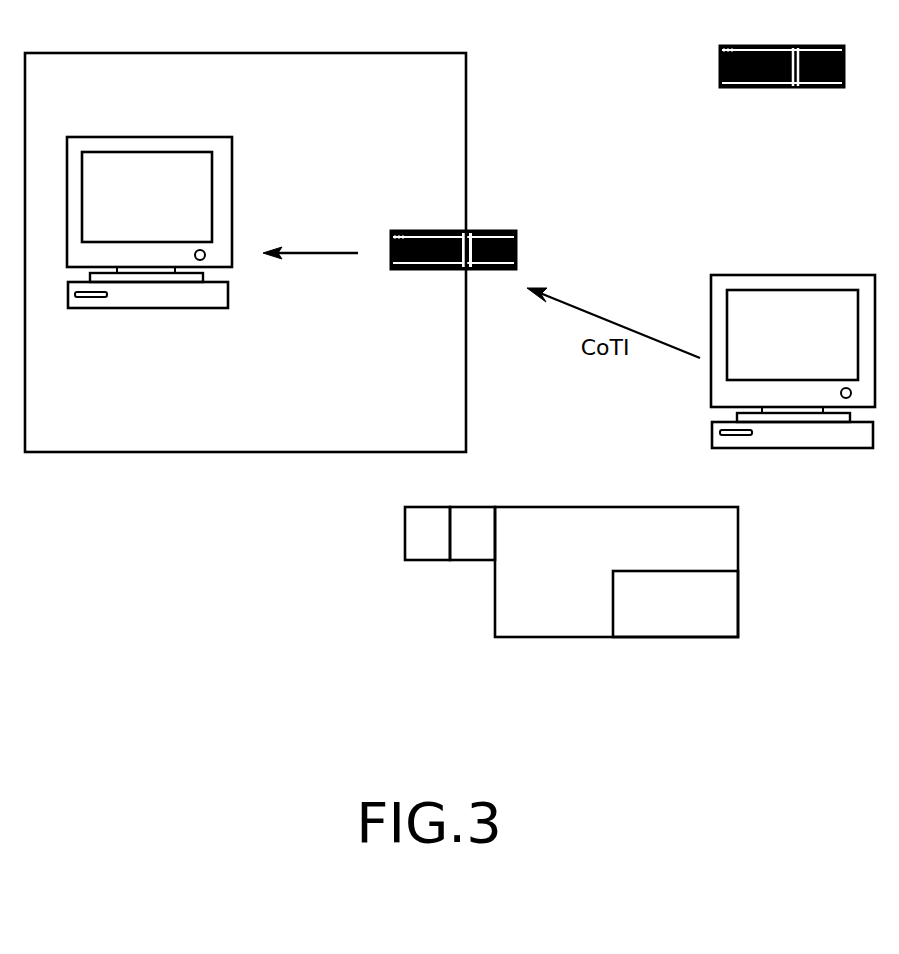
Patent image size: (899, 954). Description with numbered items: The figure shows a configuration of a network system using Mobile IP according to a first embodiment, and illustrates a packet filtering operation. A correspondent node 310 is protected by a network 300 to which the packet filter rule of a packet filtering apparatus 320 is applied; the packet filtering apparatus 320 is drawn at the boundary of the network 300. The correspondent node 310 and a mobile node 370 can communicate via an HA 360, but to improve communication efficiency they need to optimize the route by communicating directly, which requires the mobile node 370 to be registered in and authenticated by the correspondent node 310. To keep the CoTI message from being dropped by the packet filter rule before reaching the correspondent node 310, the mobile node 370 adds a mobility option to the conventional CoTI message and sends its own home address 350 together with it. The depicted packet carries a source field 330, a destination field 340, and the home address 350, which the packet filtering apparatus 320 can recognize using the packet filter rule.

The network 300 is at (250, 53).
The correspondent node 310 is at (153, 137).
The packet filtering apparatus 320 is at (490, 230).
The source address field (S) 330 is at (427, 560).
The destination address field (D) 340 is at (472, 560).
The home address 350 is at (670, 637).
The HA 360 is at (788, 45).
The mobile node 370 is at (798, 275).